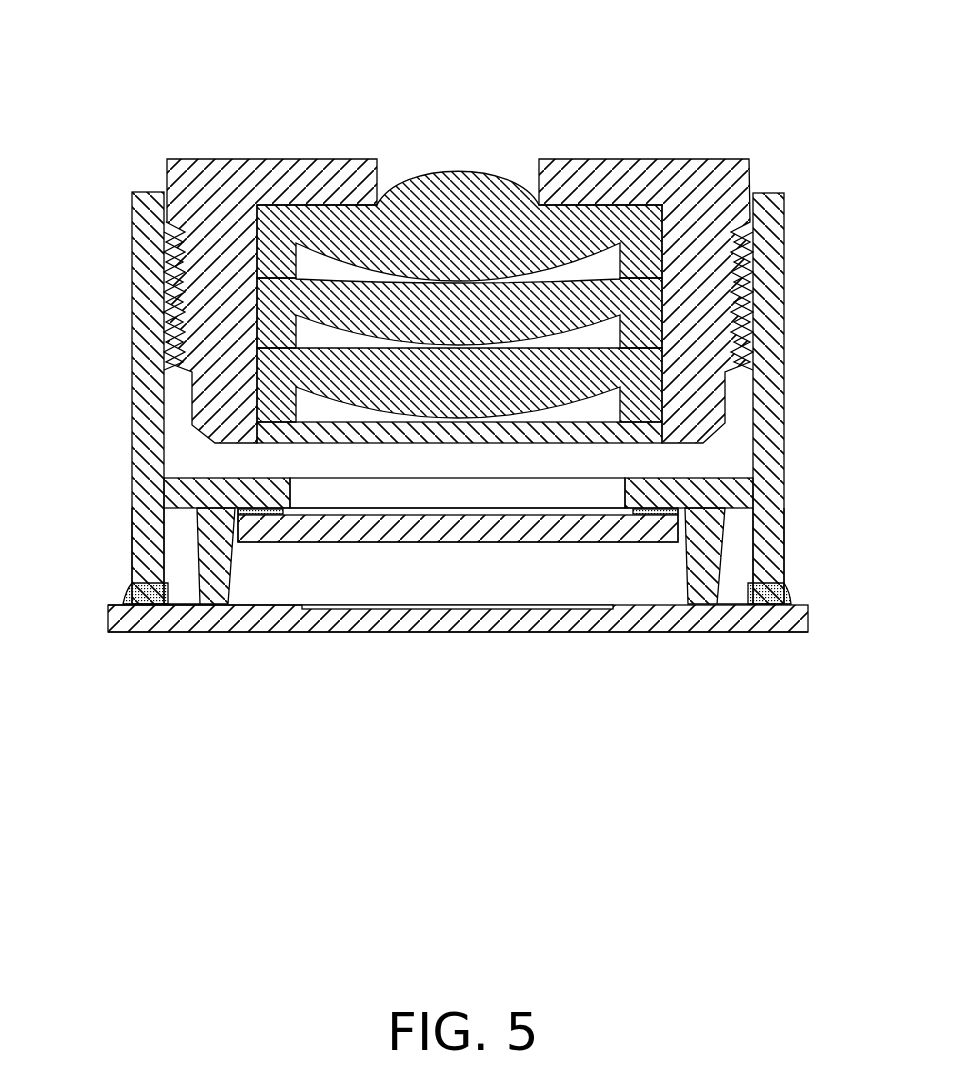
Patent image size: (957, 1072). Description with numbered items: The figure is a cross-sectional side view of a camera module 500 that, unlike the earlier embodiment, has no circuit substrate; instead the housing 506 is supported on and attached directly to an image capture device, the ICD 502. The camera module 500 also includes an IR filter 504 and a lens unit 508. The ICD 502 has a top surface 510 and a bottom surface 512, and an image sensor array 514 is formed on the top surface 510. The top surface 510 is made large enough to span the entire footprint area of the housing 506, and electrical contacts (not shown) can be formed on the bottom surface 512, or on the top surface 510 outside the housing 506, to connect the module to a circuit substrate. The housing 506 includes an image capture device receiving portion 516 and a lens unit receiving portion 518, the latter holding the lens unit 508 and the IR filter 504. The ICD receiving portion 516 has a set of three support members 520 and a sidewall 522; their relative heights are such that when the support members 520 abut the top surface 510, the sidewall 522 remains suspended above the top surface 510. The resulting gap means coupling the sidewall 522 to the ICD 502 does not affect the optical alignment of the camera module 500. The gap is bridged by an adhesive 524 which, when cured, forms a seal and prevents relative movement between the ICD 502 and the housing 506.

The camera module 500 is at (185, 90).
The ICD 502 is at (442, 618).
The IR filter 504 is at (432, 541).
The housing 506 is at (770, 393).
The lens unit 508 is at (700, 180).
The top surface 510 is at (268, 603).
The bottom surface 512 is at (568, 630).
The image sensor array 514 is at (477, 608).
The image capture device receiving portion 516 is at (96, 511).
The lens unit receiving portion 518 is at (86, 288).
The support members 520 is at (215, 567).
The sidewall 522 is at (147, 557).
The adhesive 524 is at (127, 595).